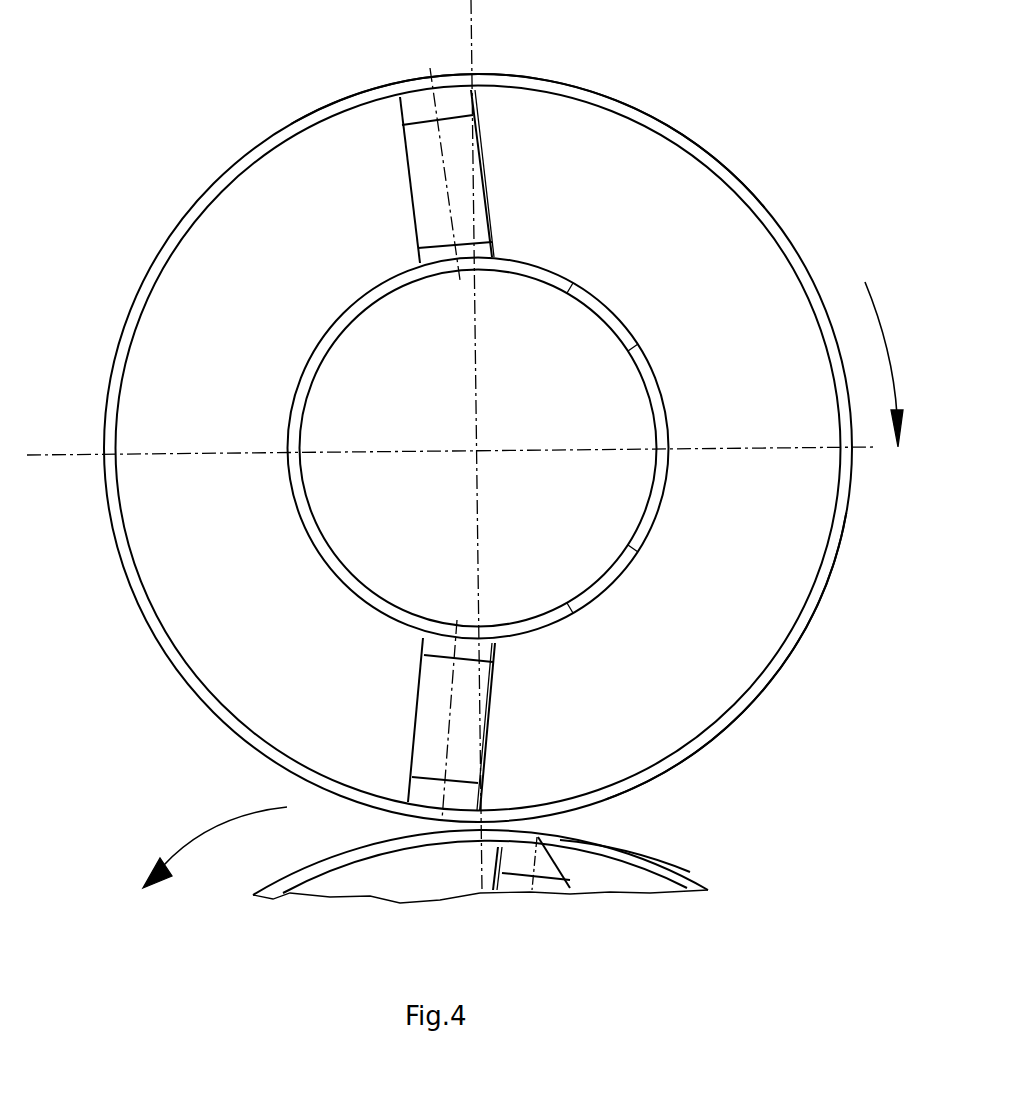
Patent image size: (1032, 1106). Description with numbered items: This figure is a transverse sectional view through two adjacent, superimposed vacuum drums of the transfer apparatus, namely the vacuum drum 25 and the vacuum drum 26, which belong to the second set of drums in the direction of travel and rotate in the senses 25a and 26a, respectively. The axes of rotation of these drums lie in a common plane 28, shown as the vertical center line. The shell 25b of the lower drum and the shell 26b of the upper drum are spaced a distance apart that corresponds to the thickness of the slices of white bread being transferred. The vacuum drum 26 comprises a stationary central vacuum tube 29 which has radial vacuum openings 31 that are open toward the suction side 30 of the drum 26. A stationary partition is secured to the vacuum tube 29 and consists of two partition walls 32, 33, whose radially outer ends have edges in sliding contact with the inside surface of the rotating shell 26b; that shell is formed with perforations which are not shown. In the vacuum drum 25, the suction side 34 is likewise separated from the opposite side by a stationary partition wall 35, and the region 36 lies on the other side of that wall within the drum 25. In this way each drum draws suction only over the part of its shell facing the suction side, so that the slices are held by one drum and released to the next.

The vacuum drum 25 is at (705, 878).
The sense of rotation of vacuum drum 25 25a is at (227, 832).
The shell of vacuum drum 25 25b is at (648, 858).
The vacuum drum 26 is at (817, 627).
The sense of rotation of vacuum drum 26 26a is at (877, 303).
The shell of vacuum drum 26 26b is at (708, 162).
The common plane 28 is at (473, 47).
The stationary central vacuum tube 29 is at (288, 420).
The suction side of drum 26 30 is at (572, 120).
The radial vacuum openings 31 is at (607, 330).
The partition wall 32 is at (425, 718).
The partition wall 33 is at (420, 185).
The suction side of drum 25 34 is at (361, 890).
The stationary partition wall 35 is at (522, 890).
The segment portion 36 is at (632, 885).